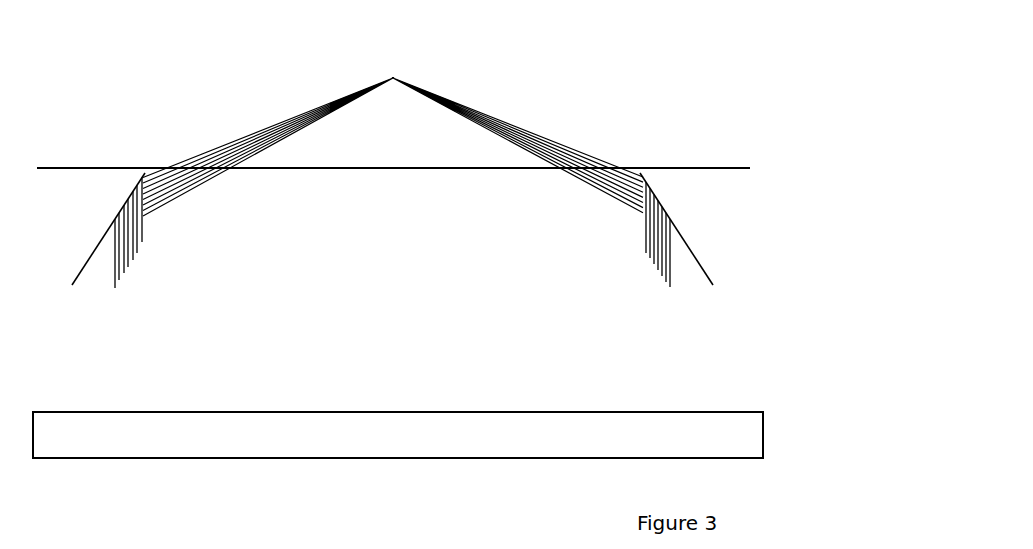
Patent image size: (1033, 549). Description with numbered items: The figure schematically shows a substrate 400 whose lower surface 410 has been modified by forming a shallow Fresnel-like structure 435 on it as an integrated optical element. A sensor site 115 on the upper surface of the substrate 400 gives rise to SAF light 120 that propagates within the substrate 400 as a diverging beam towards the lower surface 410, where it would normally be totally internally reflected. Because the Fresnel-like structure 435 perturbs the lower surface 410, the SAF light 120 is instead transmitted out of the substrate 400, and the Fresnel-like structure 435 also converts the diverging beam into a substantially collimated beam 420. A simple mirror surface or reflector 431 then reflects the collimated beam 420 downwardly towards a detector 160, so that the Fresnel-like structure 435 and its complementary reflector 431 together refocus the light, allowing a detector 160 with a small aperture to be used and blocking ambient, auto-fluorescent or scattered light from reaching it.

The substrate 400 is at (92, 123).
The lower surface 410 is at (728, 172).
The reflector 431 is at (711, 269).
The Fresnel-like structure 435 is at (612, 138).
The sensor site 115 is at (386, 77).
The SAF light 120 is at (180, 140).
The collimated beam 420 is at (137, 241).
The detector 160 is at (763, 435).